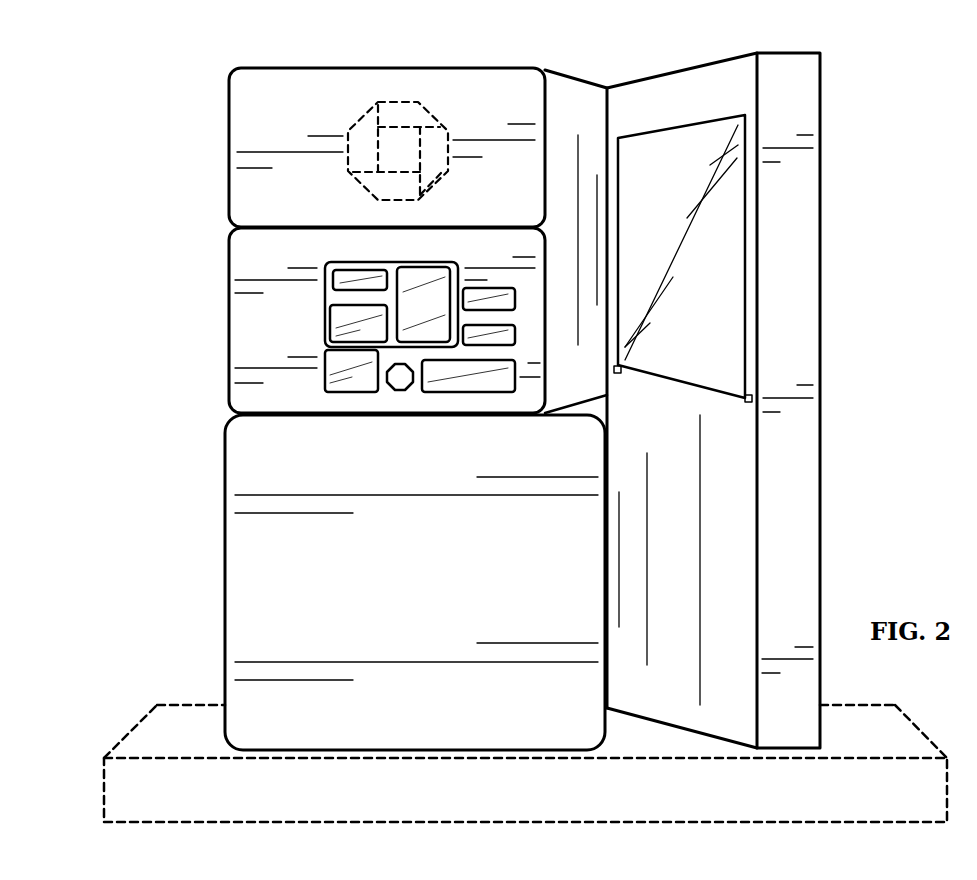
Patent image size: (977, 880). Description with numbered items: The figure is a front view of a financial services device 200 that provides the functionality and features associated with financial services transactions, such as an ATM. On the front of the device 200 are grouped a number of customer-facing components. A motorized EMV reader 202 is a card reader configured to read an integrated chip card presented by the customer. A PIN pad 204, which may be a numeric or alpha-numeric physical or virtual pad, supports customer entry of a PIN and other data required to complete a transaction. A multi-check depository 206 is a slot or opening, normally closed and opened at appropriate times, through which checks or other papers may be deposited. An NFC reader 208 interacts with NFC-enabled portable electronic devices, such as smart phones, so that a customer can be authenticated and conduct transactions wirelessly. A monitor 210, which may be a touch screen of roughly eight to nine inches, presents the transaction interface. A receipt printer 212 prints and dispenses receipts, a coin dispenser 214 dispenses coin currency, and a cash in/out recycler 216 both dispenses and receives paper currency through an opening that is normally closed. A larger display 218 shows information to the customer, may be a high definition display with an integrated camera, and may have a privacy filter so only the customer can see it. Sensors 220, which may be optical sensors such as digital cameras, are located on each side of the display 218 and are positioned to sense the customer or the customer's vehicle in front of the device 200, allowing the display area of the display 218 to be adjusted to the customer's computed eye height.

The device 200 is at (534, 50).
The motorized EMV reader 202 is at (355, 280).
The PIN pad 204 is at (337, 325).
The multi-check depository 206 is at (327, 368).
The NFC reader 208 is at (389, 386).
The monitor 210 is at (413, 280).
The receipt printer 212 is at (500, 295).
The coin dispenser 214 is at (493, 338).
The cash in/out recycler 216 is at (437, 383).
The display 218 is at (700, 252).
The sensors 220 is at (622, 363).